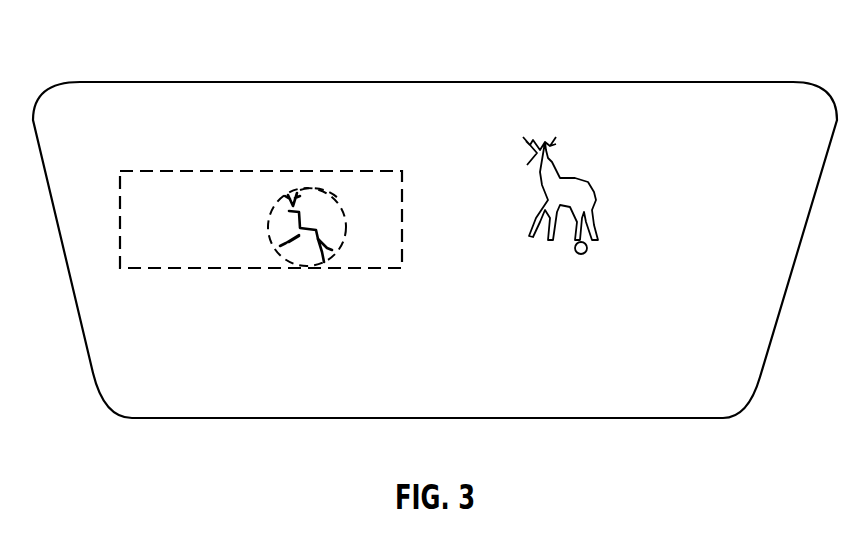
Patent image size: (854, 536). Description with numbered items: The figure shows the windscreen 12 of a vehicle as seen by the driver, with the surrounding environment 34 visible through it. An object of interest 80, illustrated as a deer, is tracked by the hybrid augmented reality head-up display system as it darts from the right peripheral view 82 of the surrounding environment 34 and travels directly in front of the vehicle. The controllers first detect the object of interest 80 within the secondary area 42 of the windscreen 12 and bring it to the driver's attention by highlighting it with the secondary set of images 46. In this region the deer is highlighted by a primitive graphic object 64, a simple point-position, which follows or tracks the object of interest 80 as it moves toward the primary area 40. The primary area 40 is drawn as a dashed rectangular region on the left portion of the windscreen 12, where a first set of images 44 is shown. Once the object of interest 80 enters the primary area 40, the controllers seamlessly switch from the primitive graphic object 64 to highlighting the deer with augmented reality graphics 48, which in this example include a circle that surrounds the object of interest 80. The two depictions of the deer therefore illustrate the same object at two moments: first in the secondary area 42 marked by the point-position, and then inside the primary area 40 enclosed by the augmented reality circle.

The windscreen 12 is at (590, 82).
The surrounding environment 34 is at (639, 112).
The secondary area 42 is at (479, 129).
The primary area 40 is at (168, 271).
The highlight circle 44 is at (346, 228).
The augmented reality graphics 48 is at (318, 190).
The object of interest 80 is at (318, 262).
The primitive graphic object 64 is at (588, 248).
The secondary set of images 46 is at (582, 256).
The right peripheral view 82 is at (697, 244).